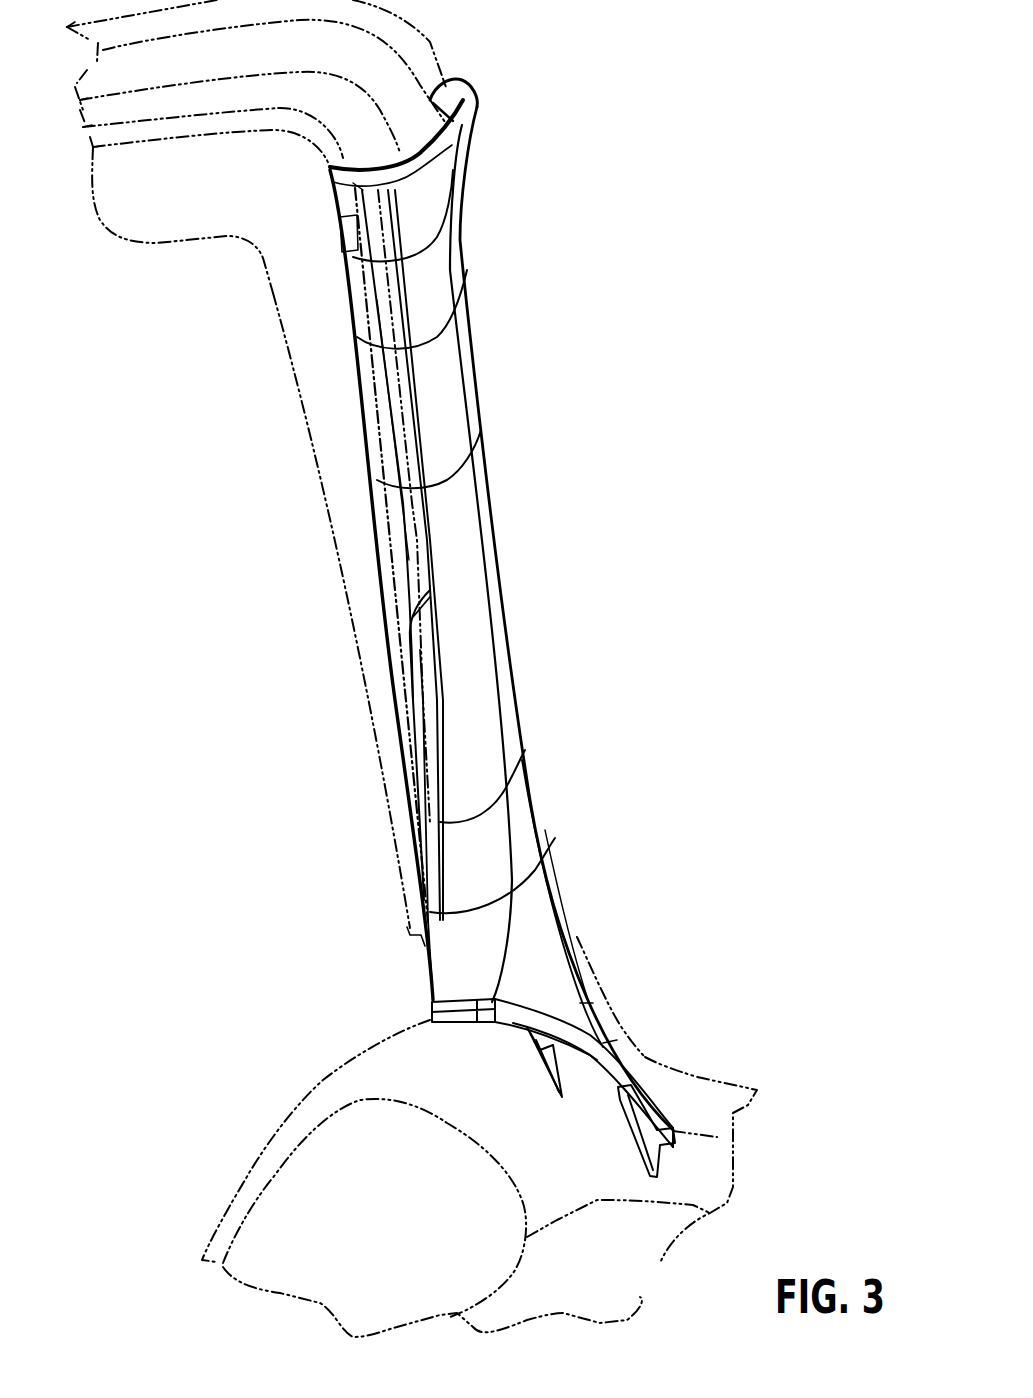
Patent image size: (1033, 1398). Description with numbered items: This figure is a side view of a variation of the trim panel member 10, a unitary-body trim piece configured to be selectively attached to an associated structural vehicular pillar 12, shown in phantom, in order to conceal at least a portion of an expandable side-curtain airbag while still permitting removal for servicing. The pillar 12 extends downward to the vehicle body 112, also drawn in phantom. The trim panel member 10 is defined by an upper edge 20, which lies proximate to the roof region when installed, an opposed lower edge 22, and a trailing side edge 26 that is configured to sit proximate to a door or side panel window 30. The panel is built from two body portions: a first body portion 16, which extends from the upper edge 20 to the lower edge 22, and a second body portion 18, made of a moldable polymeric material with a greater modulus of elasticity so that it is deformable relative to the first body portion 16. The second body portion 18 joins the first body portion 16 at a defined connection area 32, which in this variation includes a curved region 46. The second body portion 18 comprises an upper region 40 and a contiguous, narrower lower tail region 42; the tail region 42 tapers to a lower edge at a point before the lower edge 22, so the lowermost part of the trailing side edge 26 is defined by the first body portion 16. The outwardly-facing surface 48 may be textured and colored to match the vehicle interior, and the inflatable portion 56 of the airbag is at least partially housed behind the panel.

The trim panel member 10 is at (487, 266).
The pillar 12 is at (433, 43).
The first body portion 16 is at (470, 520).
The second body portion 18 is at (403, 560).
The upper edge 20 is at (346, 165).
The lower edge 22 is at (613, 1070).
The trailing side edge 26 is at (393, 703).
The window 30 is at (158, 209).
The connection area 32 is at (420, 583).
The upper region 40 is at (380, 430).
The tail region 42 is at (408, 793).
The curved region 46 is at (423, 623).
The outwardly-facing surface 48 is at (526, 834).
The inflatable portion 56 is at (342, 192).
The body 112 is at (757, 1113).